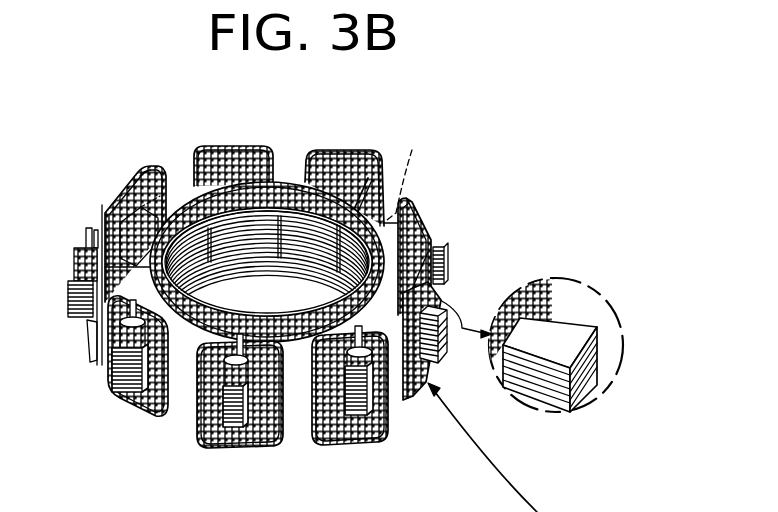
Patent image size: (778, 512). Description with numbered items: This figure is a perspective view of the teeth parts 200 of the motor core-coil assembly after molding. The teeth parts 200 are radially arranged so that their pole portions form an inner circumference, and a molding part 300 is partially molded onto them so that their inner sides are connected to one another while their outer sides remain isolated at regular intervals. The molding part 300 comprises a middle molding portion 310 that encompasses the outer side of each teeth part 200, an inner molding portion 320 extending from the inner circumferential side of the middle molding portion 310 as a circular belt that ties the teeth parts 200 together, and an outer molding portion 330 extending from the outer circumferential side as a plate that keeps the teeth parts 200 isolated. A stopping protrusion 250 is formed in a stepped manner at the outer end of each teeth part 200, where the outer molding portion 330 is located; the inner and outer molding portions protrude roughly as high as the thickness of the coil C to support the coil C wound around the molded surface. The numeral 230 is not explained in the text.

The molding part 300 is at (287, 166).
The coil winding 230 is at (333, 212).
The middle molding portion 310 is at (142, 212).
The inner molding portion 320 is at (153, 172).
The outer molding portion 330 is at (113, 197).
The teeth part 200 is at (102, 378).
The stopping protrusion 250 is at (444, 246).
The coil C is at (401, 175).